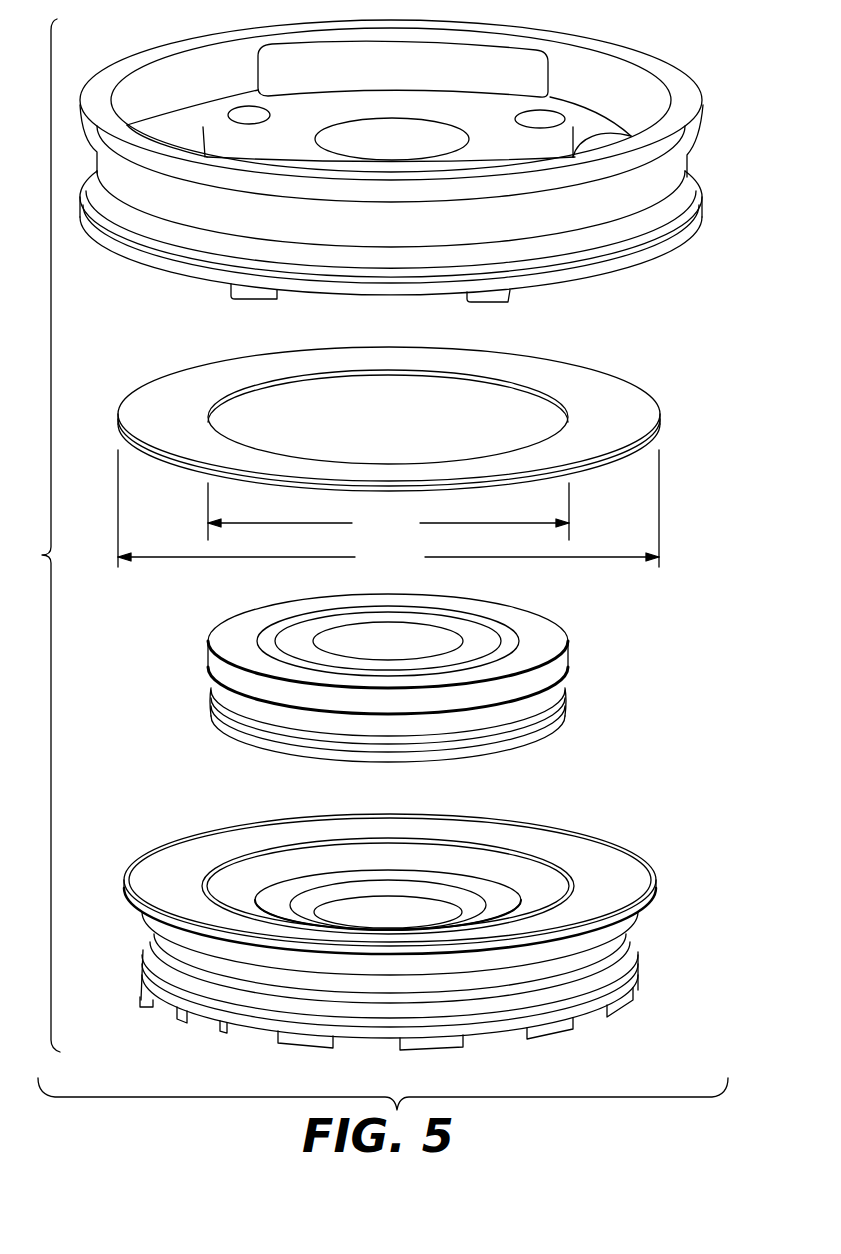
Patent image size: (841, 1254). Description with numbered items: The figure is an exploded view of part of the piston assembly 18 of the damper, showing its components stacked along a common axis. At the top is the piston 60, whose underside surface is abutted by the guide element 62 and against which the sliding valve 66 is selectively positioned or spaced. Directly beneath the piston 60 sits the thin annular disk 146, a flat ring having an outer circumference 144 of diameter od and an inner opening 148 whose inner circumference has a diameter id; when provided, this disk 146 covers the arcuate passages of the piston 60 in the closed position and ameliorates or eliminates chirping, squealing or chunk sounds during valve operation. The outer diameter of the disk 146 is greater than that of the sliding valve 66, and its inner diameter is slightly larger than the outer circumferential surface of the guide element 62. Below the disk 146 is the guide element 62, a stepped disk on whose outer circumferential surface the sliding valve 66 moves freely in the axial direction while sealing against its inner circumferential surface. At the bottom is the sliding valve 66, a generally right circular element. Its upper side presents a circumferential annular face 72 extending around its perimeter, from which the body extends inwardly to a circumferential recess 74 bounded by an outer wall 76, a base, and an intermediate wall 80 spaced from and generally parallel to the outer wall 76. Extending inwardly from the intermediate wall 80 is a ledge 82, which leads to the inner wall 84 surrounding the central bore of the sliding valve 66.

The piston assembly 18 is at (36, 535).
The piston 60 is at (612, 53).
The outer circumference 144 is at (418, 444).
The thin annular disk 146 is at (643, 412).
The inner opening of washer 148 is at (538, 403).
The guide element 62 is at (553, 633).
The sliding valve 66 is at (423, 916).
The circumferential annular face 72 is at (622, 868).
The circumferential recess 74 is at (533, 875).
The outer wall 76 is at (495, 858).
The intermediate wall 80 is at (243, 908).
The ledge 82 is at (487, 887).
The inner wall 84 is at (428, 890).